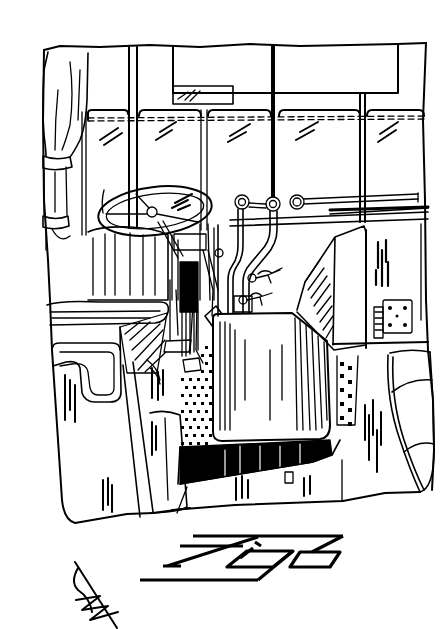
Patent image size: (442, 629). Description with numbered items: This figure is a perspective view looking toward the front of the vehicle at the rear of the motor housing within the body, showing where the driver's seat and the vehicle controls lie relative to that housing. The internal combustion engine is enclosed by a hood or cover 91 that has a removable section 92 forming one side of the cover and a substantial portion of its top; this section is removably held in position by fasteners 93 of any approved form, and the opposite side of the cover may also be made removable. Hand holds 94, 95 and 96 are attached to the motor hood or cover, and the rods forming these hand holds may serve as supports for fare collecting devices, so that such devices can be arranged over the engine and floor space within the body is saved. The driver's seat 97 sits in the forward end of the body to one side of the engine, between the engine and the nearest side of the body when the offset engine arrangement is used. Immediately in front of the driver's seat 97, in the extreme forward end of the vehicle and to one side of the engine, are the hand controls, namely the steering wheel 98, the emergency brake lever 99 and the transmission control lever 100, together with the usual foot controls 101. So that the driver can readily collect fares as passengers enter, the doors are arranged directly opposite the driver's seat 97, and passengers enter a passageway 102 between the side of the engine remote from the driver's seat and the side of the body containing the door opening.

The hood or cover 91 is at (259, 398).
The removable section 92 is at (322, 300).
The fasteners 93 is at (268, 298).
The hand hold 94 is at (391, 192).
The hand hold 95 is at (280, 182).
The hand hold 96 is at (246, 196).
The driver's seat 97 is at (104, 194).
The steering wheel 98 is at (158, 190).
The emergency brake lever 99 is at (180, 278).
The transmission control lever 100 is at (226, 322).
The foot controls 101 is at (177, 346).
The passageway 102 is at (388, 490).